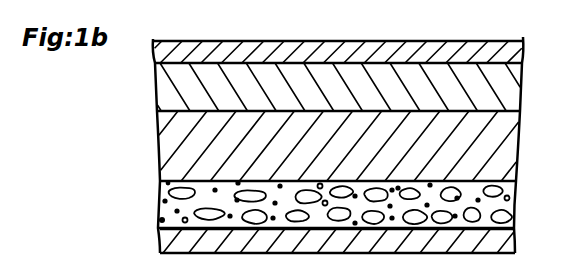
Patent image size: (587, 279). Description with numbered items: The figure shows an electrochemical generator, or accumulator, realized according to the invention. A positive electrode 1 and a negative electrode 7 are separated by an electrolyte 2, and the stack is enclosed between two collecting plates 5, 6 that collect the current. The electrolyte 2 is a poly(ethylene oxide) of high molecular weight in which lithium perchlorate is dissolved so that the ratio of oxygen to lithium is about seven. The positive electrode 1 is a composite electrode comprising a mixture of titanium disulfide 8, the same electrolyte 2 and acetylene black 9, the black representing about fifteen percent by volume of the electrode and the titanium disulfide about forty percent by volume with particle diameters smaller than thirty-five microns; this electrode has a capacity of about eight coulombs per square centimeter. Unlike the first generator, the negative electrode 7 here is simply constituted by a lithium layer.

The positive electrode 1 is at (490, 211).
The electrolyte 2 is at (493, 161).
The collecting plate 5 is at (483, 50).
The collecting plate 6 is at (428, 249).
The negative electrode 7 is at (506, 90).
The TiS2 8 is at (170, 194).
The acetylene black 9 is at (158, 212).